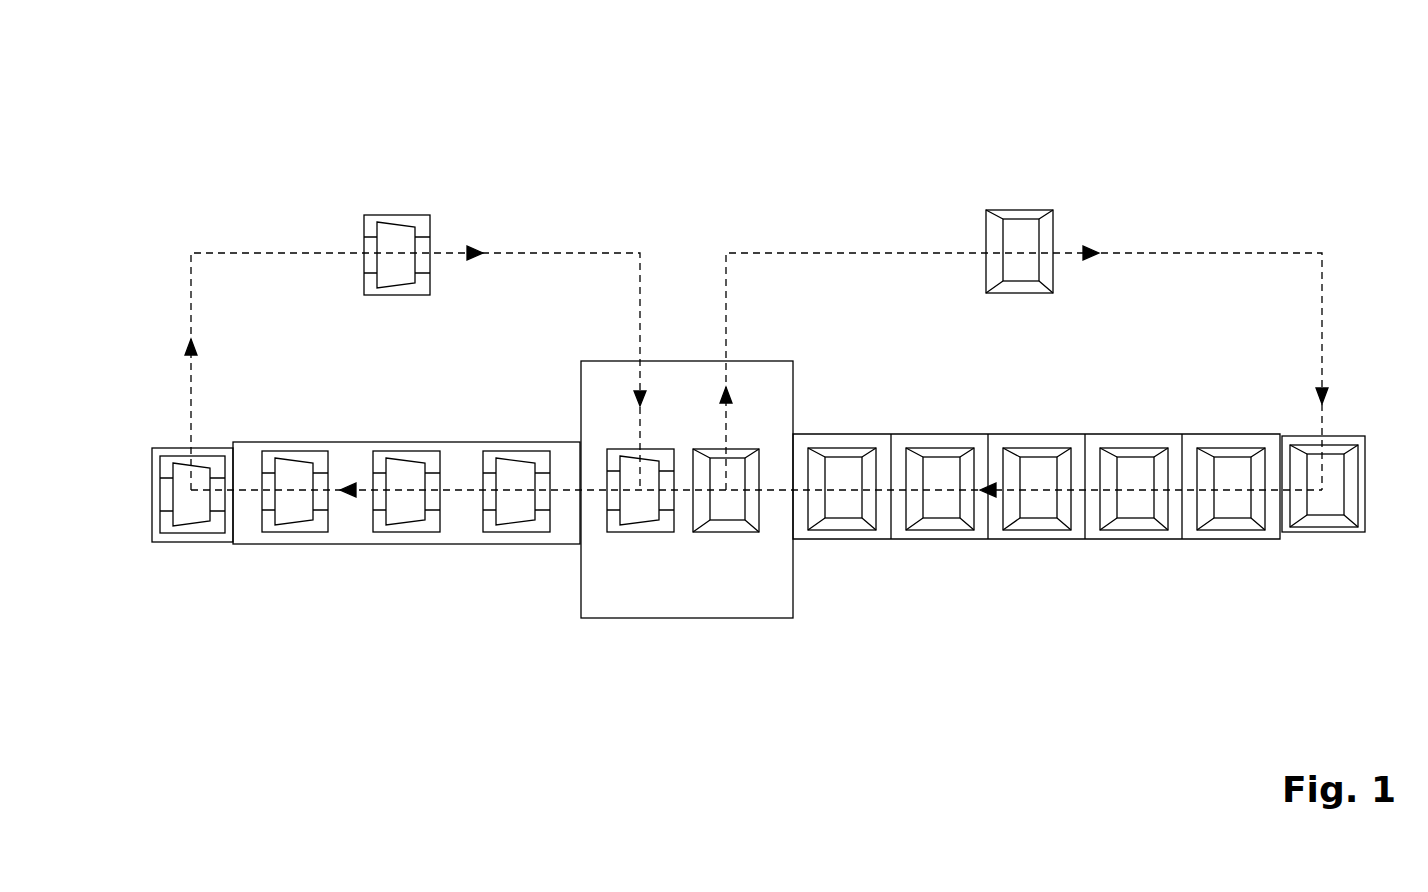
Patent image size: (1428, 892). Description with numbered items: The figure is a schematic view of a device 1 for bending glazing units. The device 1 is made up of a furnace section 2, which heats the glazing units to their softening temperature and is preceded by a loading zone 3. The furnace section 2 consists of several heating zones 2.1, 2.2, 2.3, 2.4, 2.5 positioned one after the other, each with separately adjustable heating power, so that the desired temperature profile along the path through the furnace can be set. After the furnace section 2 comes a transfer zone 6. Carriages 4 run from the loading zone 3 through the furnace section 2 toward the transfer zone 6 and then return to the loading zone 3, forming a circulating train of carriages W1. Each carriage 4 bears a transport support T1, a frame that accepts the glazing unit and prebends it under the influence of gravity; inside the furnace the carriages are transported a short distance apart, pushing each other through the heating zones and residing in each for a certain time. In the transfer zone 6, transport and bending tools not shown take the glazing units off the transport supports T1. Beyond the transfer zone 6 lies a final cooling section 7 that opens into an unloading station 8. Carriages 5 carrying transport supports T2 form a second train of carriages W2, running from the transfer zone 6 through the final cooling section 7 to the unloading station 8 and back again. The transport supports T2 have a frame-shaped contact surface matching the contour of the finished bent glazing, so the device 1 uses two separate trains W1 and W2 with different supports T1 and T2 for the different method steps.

The device for bending glazing units 1 is at (786, 168).
The furnace section 2 is at (1042, 490).
The heating zone 2.1 is at (1264, 539).
The heating zone 2.2 is at (1110, 539).
The heating zone 2.3 is at (1052, 539).
The heating zone 2.4 is at (941, 539).
The heating zone 2.5 is at (816, 539).
The loading zone 3 is at (1362, 535).
The carriage 4 is at (987, 265).
The carriage 5 is at (365, 267).
The transfer zone 6 is at (654, 588).
The final cooling section 7 is at (462, 545).
The unloading station 8 is at (153, 542).
The transport support T1 is at (1033, 237).
The transport support T2 is at (409, 240).
The train of carriages W1 is at (1296, 230).
The train of carriages W2 is at (205, 240).